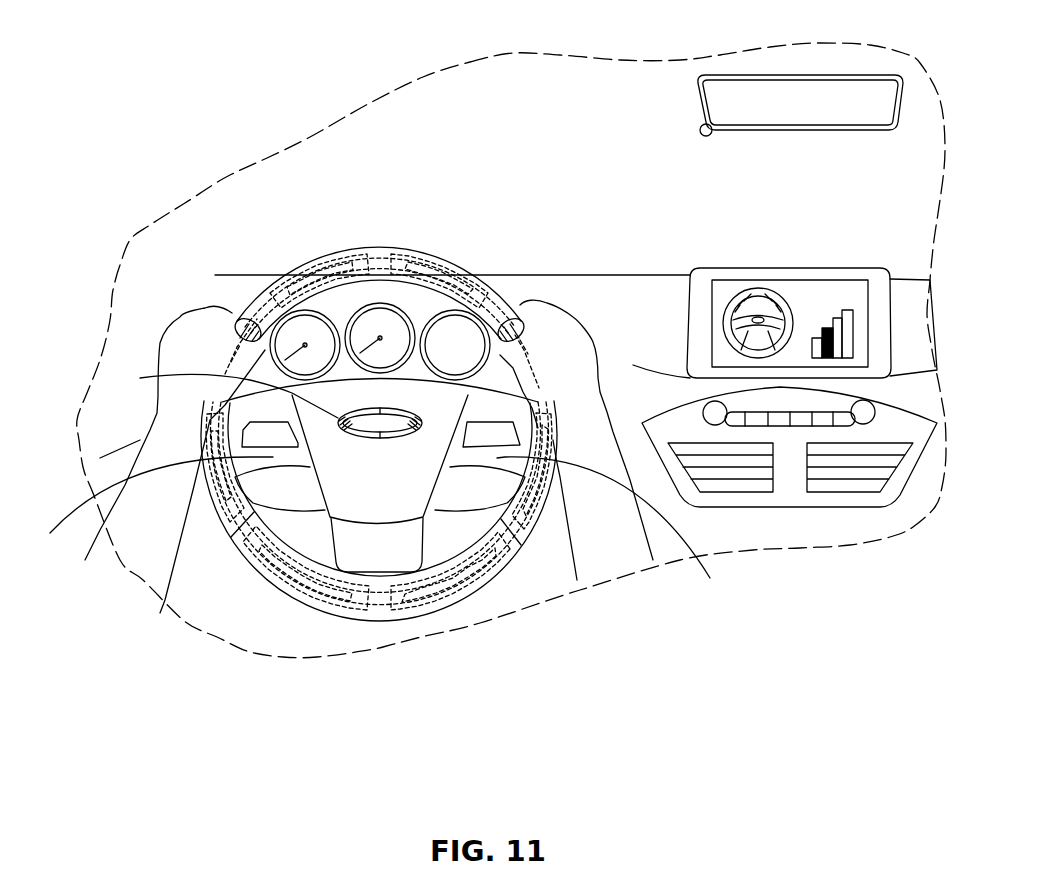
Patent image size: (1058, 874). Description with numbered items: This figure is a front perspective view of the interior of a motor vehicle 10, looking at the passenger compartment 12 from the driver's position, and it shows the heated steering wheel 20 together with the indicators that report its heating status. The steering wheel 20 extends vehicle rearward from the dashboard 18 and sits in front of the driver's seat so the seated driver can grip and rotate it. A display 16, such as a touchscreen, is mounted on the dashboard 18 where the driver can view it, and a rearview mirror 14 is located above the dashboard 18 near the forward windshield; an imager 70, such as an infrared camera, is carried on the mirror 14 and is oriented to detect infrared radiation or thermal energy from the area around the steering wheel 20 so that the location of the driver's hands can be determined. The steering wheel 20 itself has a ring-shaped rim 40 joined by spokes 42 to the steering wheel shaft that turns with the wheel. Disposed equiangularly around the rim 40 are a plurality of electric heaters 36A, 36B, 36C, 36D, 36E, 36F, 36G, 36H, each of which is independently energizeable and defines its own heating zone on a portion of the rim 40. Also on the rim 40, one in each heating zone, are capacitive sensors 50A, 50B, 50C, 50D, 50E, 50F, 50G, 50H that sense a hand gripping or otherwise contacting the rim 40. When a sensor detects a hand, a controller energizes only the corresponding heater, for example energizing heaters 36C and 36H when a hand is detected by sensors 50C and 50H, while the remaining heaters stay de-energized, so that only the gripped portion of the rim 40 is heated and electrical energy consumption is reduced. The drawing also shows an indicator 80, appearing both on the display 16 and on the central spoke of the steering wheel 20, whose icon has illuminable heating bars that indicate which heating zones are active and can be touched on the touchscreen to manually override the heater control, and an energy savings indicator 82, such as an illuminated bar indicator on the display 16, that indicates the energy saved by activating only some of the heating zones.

The motor vehicle 10 is at (218, 94).
The passenger compartment 12 is at (473, 128).
The rearview mirror 14 is at (880, 93).
The display 16 is at (803, 280).
The dashboard 18 is at (663, 297).
The heated steering wheel 20 is at (354, 431).
The heater 36A is at (327, 252).
The heater 36B is at (413, 257).
The heater 36C is at (543, 302).
The heater 36D is at (610, 520).
The heater 36E is at (473, 583).
The heater 36F is at (315, 600).
The heater 36G is at (233, 537).
The heater 36H is at (245, 300).
The rim 40 is at (300, 265).
The spoke 42 is at (381, 527).
The capacitive sensor 50A is at (248, 297).
The capacitive sensor 50B is at (475, 272).
The capacitive sensor 50C is at (525, 327).
The capacitive sensor 50D is at (573, 540).
The capacitive sensor 50E is at (417, 607).
The capacitive sensor 50F is at (280, 567).
The capacitive sensor 50G is at (220, 493).
The capacitive sensor 50H is at (233, 325).
The imager 70 is at (700, 130).
The indicator 80 is at (753, 268).
The energy savings indicator 82 is at (853, 337).